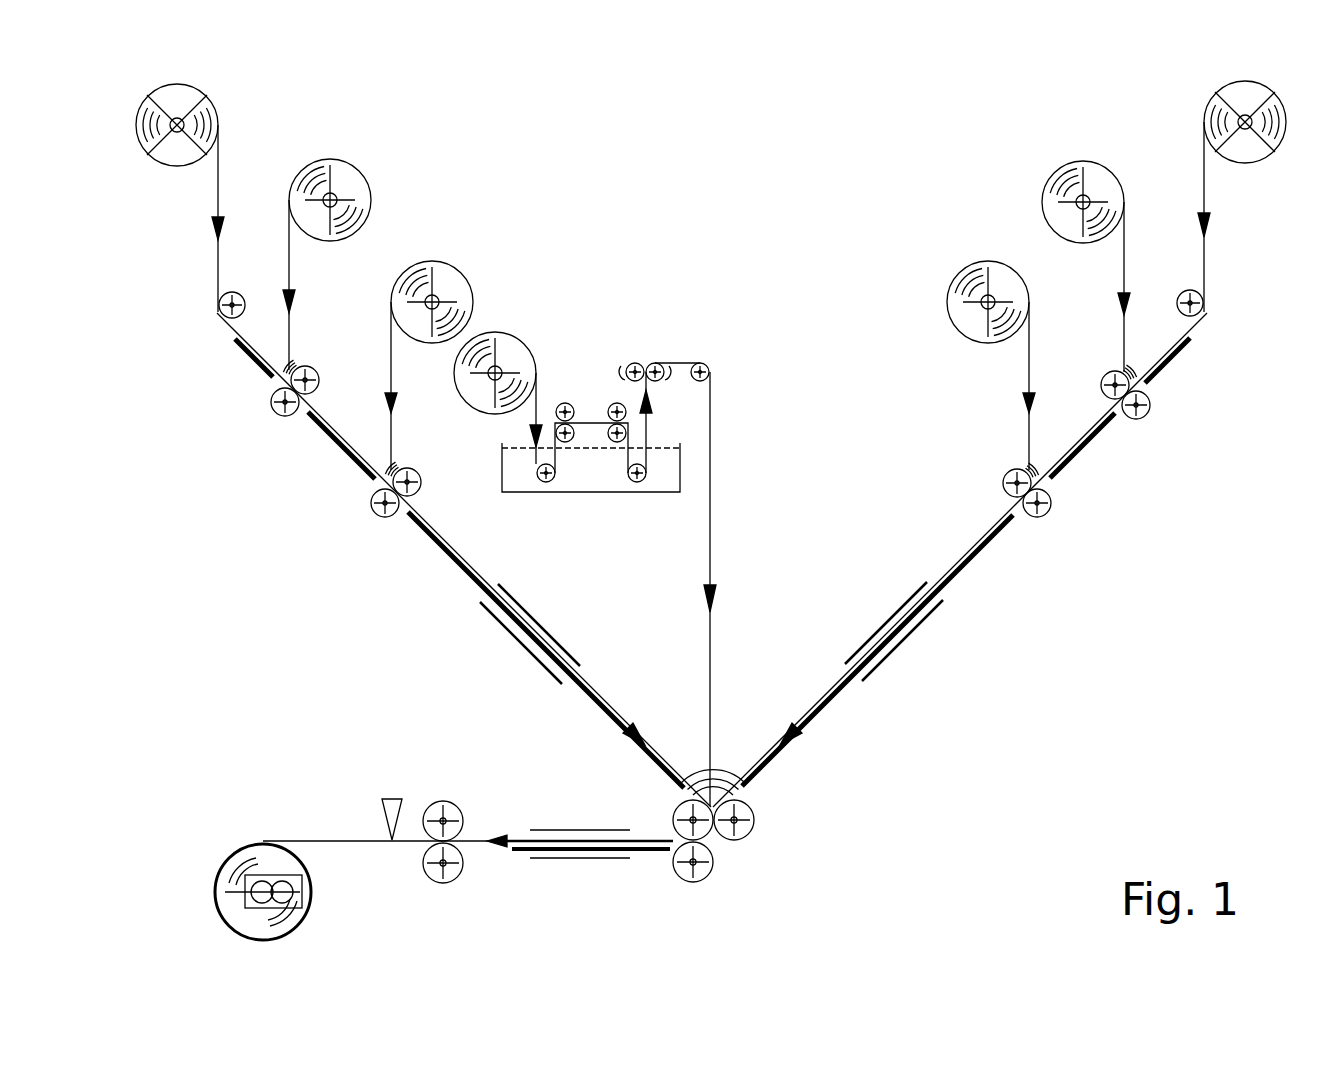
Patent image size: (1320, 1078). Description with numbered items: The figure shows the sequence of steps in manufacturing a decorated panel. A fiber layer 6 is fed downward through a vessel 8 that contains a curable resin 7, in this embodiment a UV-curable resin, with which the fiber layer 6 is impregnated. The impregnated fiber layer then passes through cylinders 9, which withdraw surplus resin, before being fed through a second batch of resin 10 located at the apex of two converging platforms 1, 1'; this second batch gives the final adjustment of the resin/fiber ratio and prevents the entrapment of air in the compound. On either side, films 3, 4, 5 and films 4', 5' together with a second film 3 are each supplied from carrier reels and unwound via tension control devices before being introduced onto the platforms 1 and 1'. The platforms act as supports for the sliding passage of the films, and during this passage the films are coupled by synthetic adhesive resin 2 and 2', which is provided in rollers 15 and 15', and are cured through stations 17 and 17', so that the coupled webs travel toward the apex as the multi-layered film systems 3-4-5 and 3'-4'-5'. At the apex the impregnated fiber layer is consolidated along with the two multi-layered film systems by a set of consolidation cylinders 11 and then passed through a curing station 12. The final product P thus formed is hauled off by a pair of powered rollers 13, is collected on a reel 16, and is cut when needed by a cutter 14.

The converging platform 1 is at (464, 560).
The converging platform 1' is at (961, 560).
The synthetic adhesive resin 2 is at (336, 400).
The synthetic adhesive resin 2' is at (1087, 400).
The film of multi-layered film system 3 is at (706, 172).
The film of multi-layered film system 4 is at (315, 242).
The film of multi-layered film system 4' is at (1070, 243).
The film of multi-layered film system 5 is at (429, 341).
The film of multi-layered film system 5' is at (974, 343).
The fiber layer 6 is at (505, 333).
The curable resin 7 is at (660, 455).
The vessel 8 is at (612, 493).
The cylinders 9 is at (628, 362).
The second batch of resin 10 is at (728, 770).
The consolidation cylinders 11 is at (752, 838).
The curing station 12 is at (562, 829).
The powered rollers 13 is at (446, 884).
The cutter 14 is at (400, 798).
The rollers 15 is at (316, 478).
The rollers 15' is at (1108, 479).
The reel 16 is at (235, 850).
The curing station 17 is at (530, 607).
The curing station 17' is at (894, 605).
The multi-layered film system 3-4-5 is at (603, 697).
The multi-layered film system 3'-4'-5' is at (802, 692).
The final product P is at (347, 840).